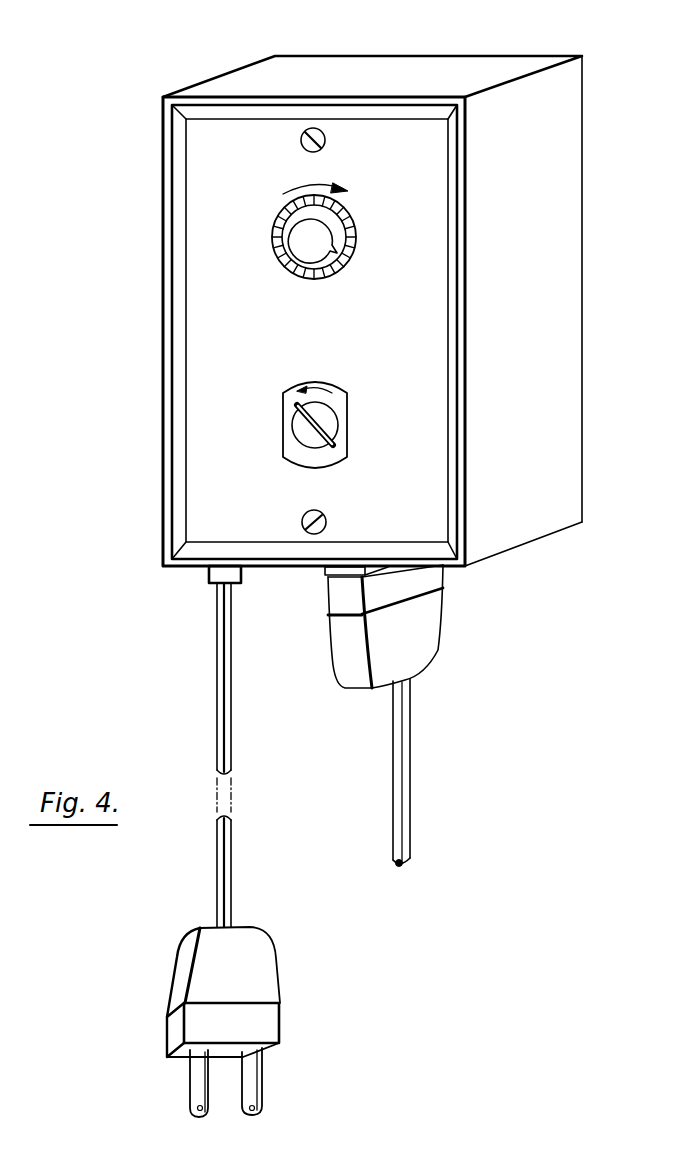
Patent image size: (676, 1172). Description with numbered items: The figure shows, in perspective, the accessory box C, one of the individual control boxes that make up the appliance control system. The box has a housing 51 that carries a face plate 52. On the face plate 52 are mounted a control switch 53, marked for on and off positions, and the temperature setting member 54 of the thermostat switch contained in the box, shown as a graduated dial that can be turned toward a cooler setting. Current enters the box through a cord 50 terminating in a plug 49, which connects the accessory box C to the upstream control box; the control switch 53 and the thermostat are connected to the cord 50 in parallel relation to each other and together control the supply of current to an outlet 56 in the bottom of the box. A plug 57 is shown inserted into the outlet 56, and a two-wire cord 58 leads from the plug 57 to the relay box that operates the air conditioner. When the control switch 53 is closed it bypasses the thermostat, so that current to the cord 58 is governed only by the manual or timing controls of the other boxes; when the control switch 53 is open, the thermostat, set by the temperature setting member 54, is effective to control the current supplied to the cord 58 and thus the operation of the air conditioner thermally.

The plug 49 is at (262, 957).
The cord 50 is at (225, 693).
The housing 51 is at (388, 43).
The face plate 52 is at (202, 311).
The control switch 53 is at (343, 435).
The temperature setting member 54 is at (322, 212).
The outlet 56 is at (343, 572).
The plug 57 is at (417, 650).
The two-wire cord 58 is at (405, 748).
The accessory box C is at (562, 253).